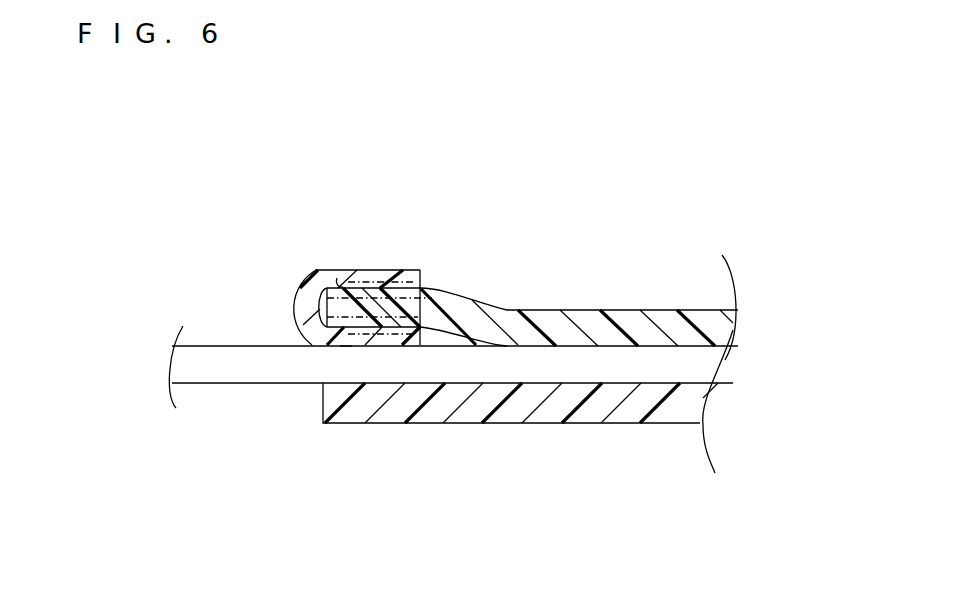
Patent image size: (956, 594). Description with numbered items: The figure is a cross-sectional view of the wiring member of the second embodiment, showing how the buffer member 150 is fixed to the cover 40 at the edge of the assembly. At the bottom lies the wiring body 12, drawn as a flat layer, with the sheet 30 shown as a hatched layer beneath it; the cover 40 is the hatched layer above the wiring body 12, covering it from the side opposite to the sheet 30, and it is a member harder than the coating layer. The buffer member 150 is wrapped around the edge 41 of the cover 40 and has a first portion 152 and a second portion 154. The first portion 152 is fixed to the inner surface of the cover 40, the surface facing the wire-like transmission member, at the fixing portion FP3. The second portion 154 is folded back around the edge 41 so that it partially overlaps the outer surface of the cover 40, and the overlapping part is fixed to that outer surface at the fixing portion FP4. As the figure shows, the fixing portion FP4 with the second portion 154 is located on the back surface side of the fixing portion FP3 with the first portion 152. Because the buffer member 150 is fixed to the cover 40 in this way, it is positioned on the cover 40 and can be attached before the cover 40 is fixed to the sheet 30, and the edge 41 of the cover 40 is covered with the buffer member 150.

The wiring body 12 is at (247, 372).
The sheet 30 is at (508, 413).
The cover 40 is at (562, 320).
The edge 41 is at (338, 304).
The buffer member 150 is at (381, 262).
The first portion 152 is at (441, 330).
The second portion 154 is at (379, 277).
The fixing portion FP3 is at (346, 347).
The fixing portion FP4 is at (343, 285).